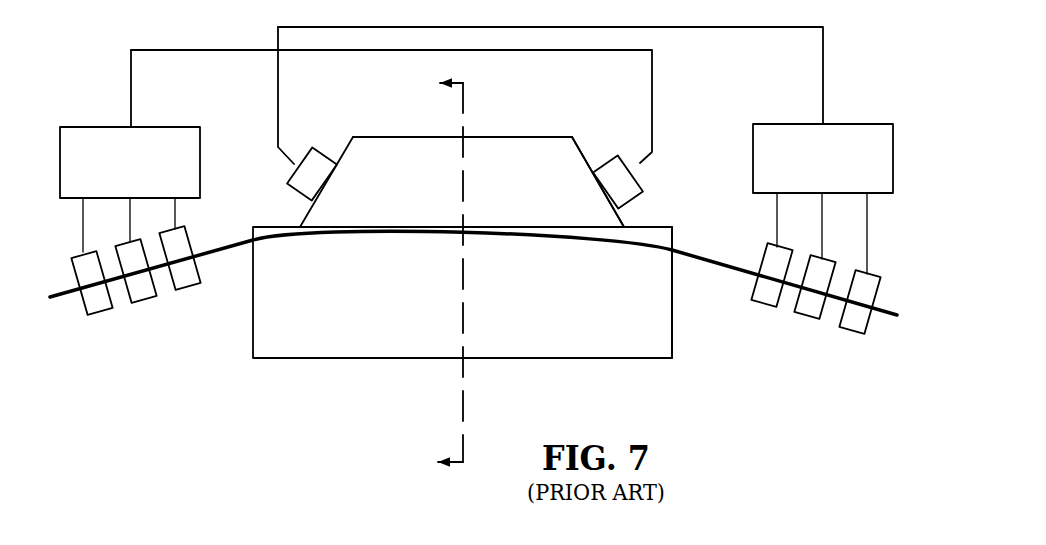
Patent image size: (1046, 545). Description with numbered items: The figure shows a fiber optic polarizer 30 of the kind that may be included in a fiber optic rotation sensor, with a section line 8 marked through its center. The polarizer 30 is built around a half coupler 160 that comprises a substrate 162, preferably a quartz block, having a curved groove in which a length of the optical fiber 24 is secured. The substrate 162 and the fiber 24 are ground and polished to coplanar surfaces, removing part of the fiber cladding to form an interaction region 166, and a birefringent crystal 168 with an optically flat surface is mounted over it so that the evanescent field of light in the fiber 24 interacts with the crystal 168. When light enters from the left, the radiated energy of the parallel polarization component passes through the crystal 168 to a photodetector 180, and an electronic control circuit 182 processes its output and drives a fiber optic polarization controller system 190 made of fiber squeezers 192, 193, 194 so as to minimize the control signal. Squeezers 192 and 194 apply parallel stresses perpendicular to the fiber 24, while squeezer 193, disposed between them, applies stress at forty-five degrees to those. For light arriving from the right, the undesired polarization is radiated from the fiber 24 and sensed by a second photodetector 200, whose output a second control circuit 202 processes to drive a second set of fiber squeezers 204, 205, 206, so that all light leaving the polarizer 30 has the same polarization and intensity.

The section line 8- 8 is at (432, 271).
The optical fiber 24 is at (692, 250).
The polarizer 30 is at (261, 121).
The half coupler 160 is at (286, 381).
The substrate 162 is at (675, 350).
The interaction region 166 is at (481, 211).
The birefringent crystal 168 is at (582, 154).
The photodetector 180 is at (640, 178).
The electronic control circuit 182 is at (108, 127).
The fiber optic polarization controller system 190 is at (127, 322).
The fiber squeezer 192 is at (97, 313).
The fiber squeezer 193 is at (145, 299).
The fiber squeezer 194 is at (191, 287).
The second photodetector 200 is at (322, 147).
The second control circuit 202 is at (790, 124).
The fiber squeezer 204 is at (850, 334).
The fiber squeezer 205 is at (800, 318).
The fiber squeezer 206 is at (768, 303).